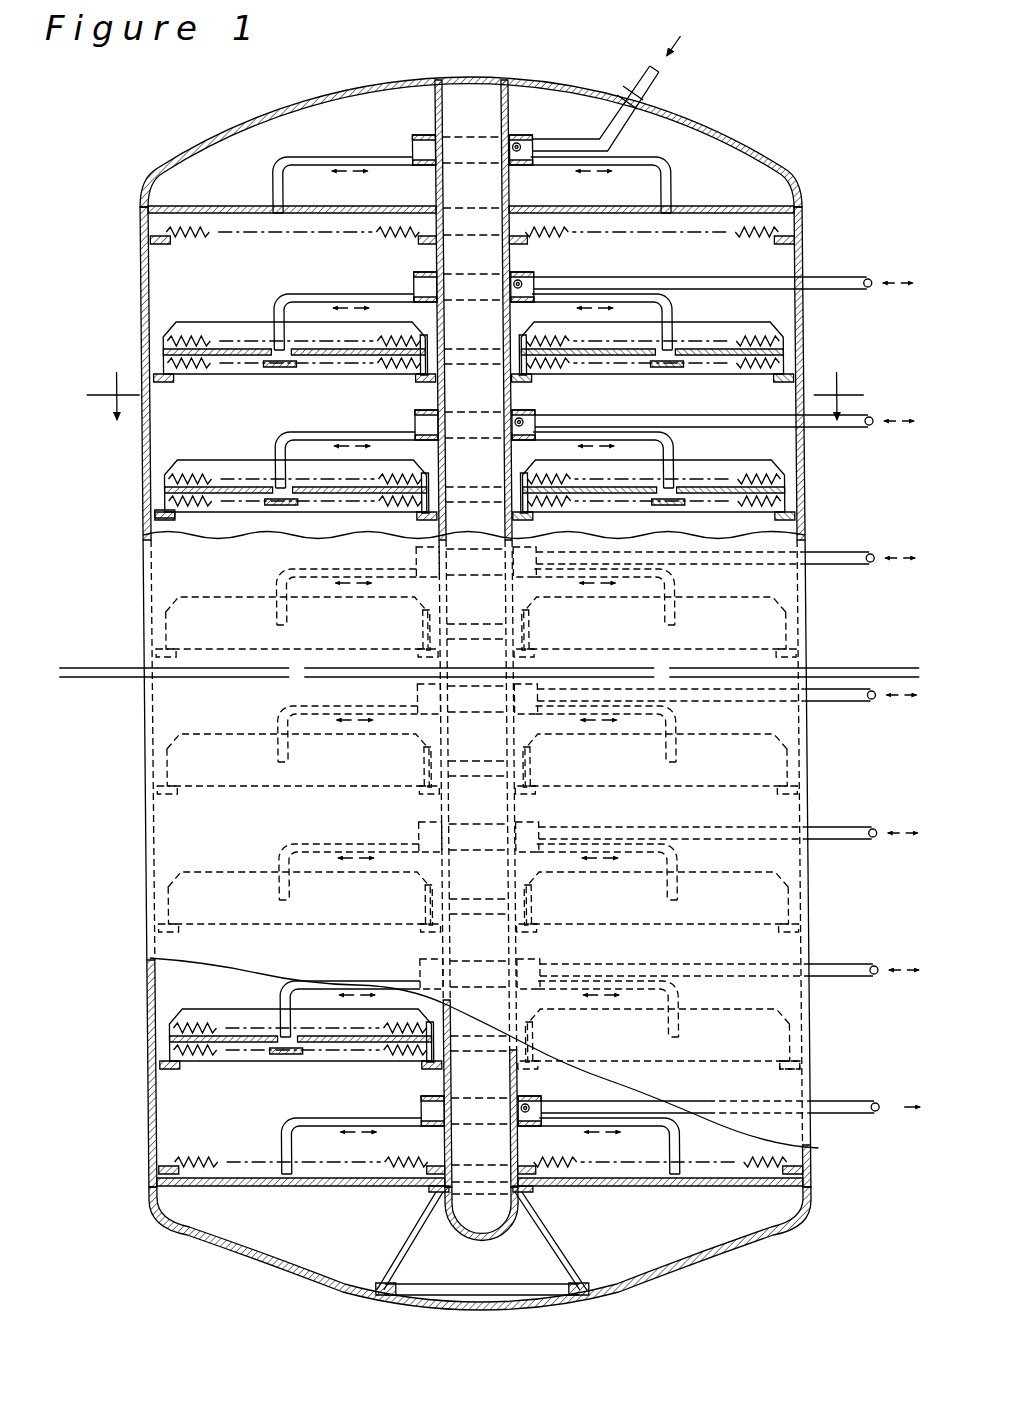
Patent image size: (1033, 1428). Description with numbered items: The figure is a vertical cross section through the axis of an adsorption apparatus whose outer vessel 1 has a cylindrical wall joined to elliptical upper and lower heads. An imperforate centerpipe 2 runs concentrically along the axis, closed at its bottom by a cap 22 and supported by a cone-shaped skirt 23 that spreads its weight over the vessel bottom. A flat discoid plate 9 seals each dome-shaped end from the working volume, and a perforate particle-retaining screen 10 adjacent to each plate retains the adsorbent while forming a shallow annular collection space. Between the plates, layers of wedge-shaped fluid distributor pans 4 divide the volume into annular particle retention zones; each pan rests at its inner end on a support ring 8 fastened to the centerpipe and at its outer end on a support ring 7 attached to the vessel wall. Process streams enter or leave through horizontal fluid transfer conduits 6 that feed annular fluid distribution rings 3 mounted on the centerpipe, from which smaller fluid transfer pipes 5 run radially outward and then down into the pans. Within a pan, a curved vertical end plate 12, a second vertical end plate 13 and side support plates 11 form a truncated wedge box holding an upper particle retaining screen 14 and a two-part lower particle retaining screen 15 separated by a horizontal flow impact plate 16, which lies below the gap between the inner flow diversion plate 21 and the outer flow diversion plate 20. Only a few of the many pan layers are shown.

The outer vessel 1 is at (138, 290).
The centerpipe 2 is at (436, 118).
The annular fluid distribution ring 3 is at (528, 135).
The fluid distributor pan 4 is at (712, 322).
The fluid transfer pipe 5 is at (305, 158).
The horizontal fluid transfer conduit 6 is at (612, 142).
The support ring 7 is at (160, 244).
The support ring 8 is at (418, 242).
The discoid plate 9 is at (250, 206).
The particle-retaining screen 10 is at (638, 240).
The side support plate 11 is at (615, 322).
The curved vertical end plate 12 is at (792, 340).
The second vertical end plate 13 is at (446, 488).
The upper particle retaining screen 14 is at (268, 340).
The lower particle retaining screen 15 is at (562, 360).
The horizontal flow impact plate 16 is at (272, 366).
The outer flow diversion plate 20 is at (742, 353).
The inner flow diversion plate 21 is at (332, 353).
The cap 22 is at (470, 1242).
The cone-shaped skirt 23 is at (578, 1245).